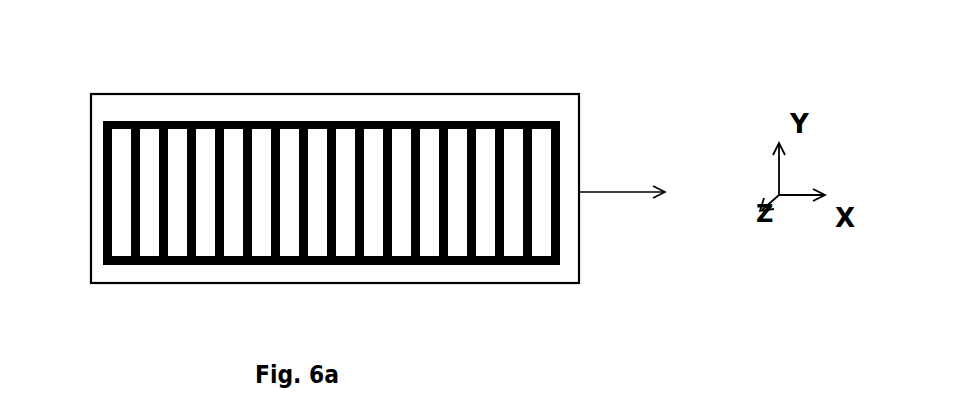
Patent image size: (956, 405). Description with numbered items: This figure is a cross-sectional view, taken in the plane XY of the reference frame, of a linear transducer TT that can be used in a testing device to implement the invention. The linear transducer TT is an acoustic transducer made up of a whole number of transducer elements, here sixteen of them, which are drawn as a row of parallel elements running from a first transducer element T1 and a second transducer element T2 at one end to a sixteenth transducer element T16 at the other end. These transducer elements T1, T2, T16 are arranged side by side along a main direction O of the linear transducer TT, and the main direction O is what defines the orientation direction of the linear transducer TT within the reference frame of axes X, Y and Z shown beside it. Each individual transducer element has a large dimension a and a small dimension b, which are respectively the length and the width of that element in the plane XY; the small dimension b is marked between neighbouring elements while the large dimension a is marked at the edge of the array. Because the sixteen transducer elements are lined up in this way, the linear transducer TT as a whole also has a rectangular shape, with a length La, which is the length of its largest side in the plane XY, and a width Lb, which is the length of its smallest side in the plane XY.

The linear transducer TT is at (424, 296).
The transducer element T1 is at (122, 240).
The transducer element T2 is at (148, 242).
The transducer element T16 is at (541, 243).
The width of the linear transducer Lb is at (580, 63).
The length of the linear transducer La is at (75, 96).
The large dimension a is at (598, 283).
The small dimension b is at (248, 260).
The main direction O is at (627, 195).